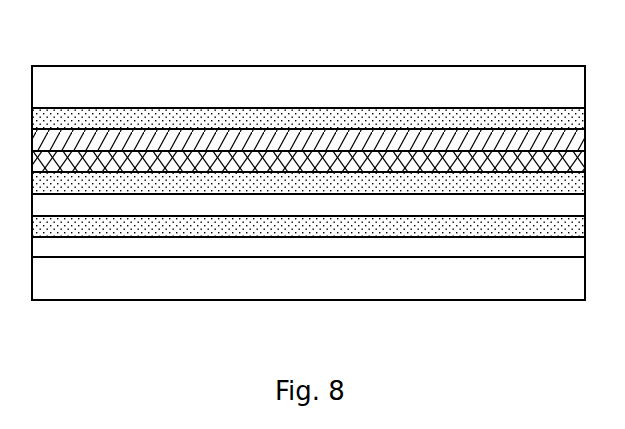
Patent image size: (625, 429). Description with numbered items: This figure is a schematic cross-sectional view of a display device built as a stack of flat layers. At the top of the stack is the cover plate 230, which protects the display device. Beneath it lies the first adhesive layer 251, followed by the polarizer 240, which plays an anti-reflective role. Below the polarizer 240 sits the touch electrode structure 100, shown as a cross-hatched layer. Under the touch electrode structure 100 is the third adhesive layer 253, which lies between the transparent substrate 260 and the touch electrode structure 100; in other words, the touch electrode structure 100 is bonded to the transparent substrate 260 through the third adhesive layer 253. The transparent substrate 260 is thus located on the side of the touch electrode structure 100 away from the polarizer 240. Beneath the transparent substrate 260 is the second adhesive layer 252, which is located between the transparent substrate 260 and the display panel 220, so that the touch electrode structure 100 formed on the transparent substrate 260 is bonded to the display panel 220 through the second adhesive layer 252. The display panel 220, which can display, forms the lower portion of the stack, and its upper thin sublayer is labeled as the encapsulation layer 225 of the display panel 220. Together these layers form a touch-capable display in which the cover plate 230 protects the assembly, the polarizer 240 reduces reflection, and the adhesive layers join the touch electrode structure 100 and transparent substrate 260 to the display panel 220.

The touch electrode structure 100 is at (308, 92).
The display panel 220 is at (308, 310).
The encapsulation layer 225 is at (308, 300).
The cover plate 230 is at (308, 60).
The polarizer 240 is at (308, 82).
The first adhesive layer 251 is at (308, 71).
The second adhesive layer 252 is at (308, 289).
The third adhesive layer 253 is at (308, 103).
The transparent substrate 260 is at (308, 278).